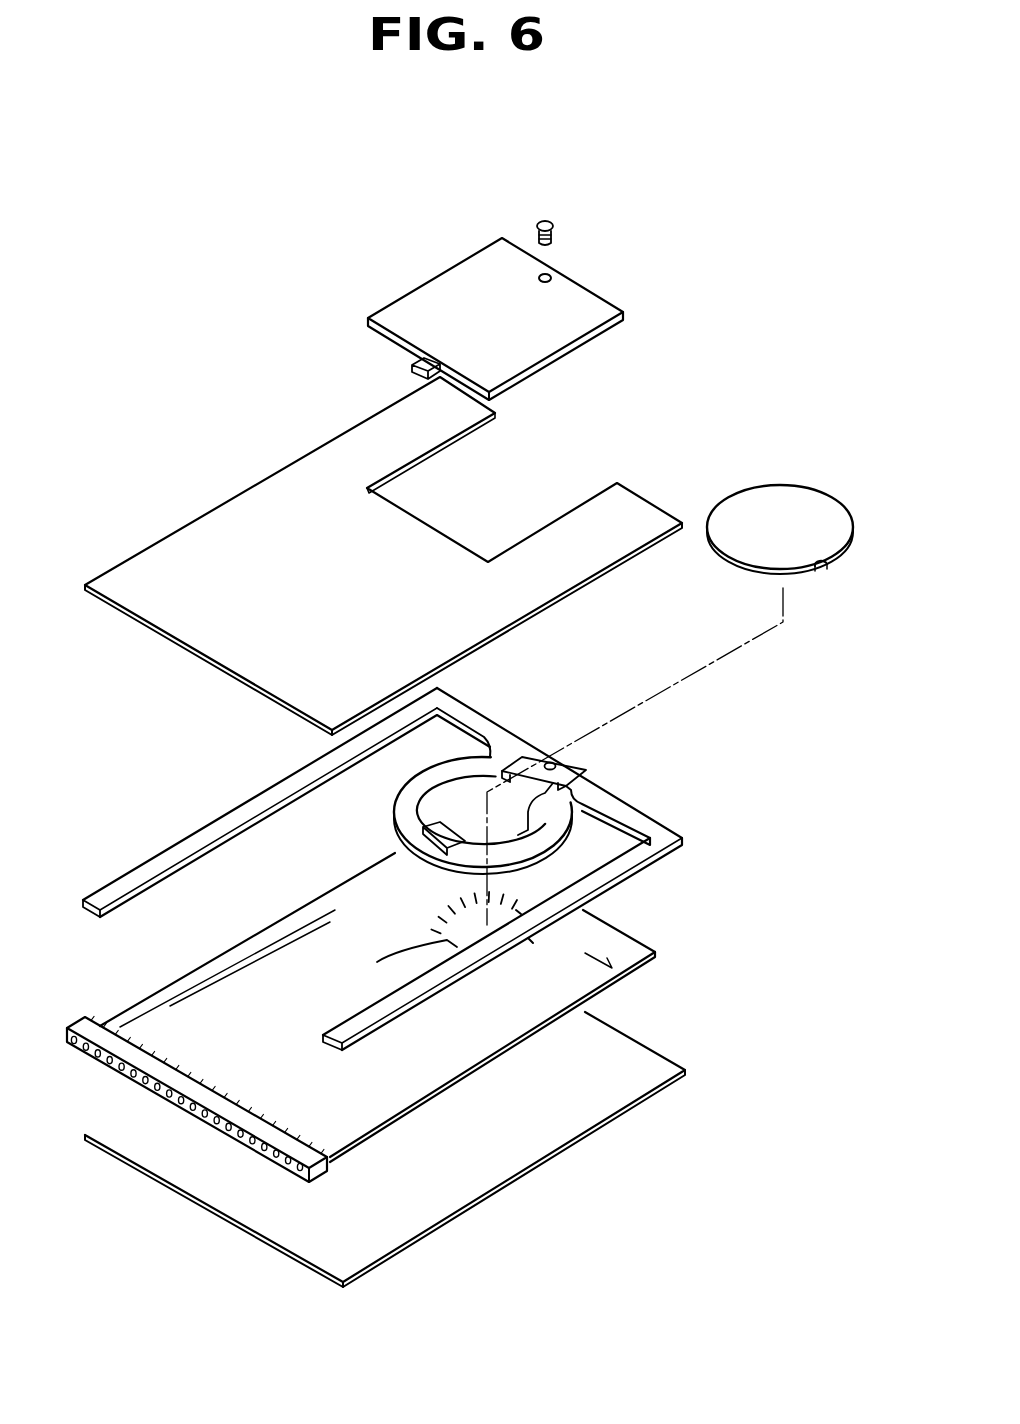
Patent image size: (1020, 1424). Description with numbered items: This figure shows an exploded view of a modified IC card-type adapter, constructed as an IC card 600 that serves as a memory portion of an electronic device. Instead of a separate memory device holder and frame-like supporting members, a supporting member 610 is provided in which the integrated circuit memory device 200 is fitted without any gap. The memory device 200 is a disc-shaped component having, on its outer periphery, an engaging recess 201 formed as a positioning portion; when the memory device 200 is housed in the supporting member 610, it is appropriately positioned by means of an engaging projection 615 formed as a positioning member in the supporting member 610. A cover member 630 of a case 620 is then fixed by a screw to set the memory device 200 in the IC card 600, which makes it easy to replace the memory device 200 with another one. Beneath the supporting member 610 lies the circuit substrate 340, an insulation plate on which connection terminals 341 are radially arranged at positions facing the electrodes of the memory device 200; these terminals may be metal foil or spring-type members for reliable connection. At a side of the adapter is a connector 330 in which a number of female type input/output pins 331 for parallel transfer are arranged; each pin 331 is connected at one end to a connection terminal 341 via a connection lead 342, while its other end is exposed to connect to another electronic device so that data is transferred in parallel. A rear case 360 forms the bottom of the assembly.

The IC card 600 is at (277, 325).
The cover member 630 is at (587, 302).
The case 620 is at (628, 520).
The integrated circuit memory device 200 is at (784, 478).
The engaging recess 201 is at (822, 568).
The engaging projection 615 is at (568, 777).
The supporting member 610 is at (637, 860).
The circuit substrate 340 is at (655, 955).
The connection lead 342 is at (230, 953).
The connection terminal 341 is at (530, 940).
The connector 330 is at (100, 1033).
The input/output pins 331 is at (240, 1144).
The rear case 360 is at (615, 1088).